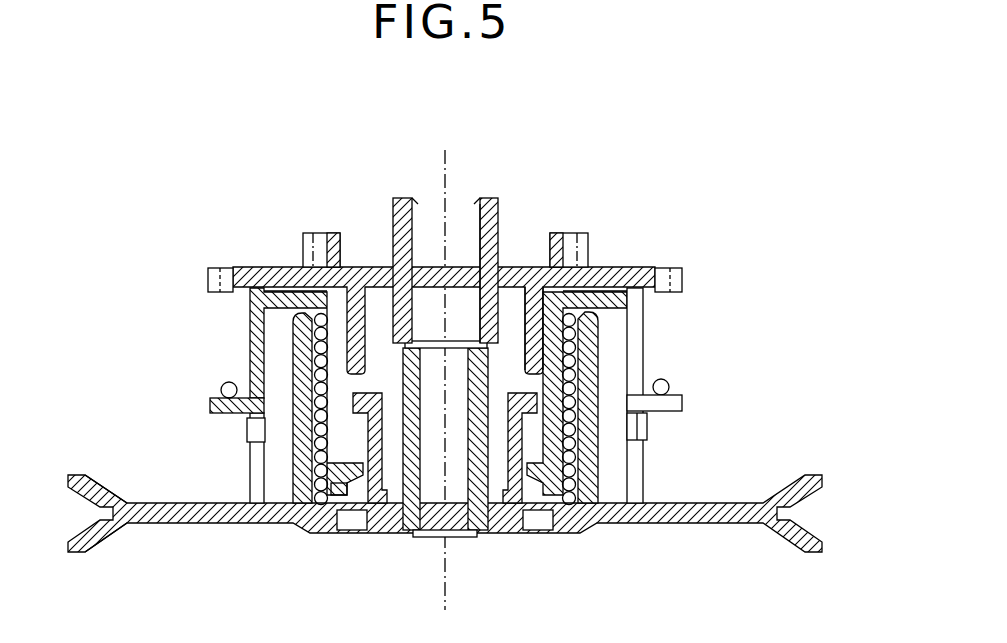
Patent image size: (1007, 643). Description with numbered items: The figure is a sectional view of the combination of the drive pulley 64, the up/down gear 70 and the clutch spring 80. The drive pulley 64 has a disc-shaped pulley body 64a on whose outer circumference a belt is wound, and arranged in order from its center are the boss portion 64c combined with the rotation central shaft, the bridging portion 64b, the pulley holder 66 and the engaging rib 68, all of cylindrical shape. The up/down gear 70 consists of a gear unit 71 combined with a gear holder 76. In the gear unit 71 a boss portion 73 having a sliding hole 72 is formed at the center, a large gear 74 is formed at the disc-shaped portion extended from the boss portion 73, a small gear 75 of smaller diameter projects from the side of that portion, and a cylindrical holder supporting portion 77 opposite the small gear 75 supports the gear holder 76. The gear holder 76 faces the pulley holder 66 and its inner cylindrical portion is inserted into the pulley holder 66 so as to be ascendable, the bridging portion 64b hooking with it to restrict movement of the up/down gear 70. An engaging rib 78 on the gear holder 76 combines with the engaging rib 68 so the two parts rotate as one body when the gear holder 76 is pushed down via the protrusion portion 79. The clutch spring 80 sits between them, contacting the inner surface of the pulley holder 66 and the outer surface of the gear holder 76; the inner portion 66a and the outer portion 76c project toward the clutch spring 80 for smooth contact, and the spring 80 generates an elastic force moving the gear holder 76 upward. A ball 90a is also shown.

The drive pulley 64 is at (612, 533).
The pulley body 64a is at (733, 515).
The bridging portion 64b is at (517, 447).
The boss portion 64c is at (466, 485).
The pulley holder 66 is at (590, 487).
The inner portion 66a is at (333, 497).
The engaging rib 68 is at (640, 460).
The up/down gear 70 is at (636, 218).
The gear unit 71 is at (253, 277).
The sliding hole 72 is at (425, 220).
The boss portion 73 is at (498, 223).
The large gear 74 is at (212, 275).
The small gear 75 is at (305, 245).
The gear holder 76 is at (232, 321).
The outer portion 76c is at (328, 368).
The holder supporting portion 77 is at (534, 323).
The engaging rib 78 is at (636, 352).
The protrusion portion 79 is at (208, 400).
The clutch spring 80 is at (568, 386).
The ball 90a is at (218, 392).